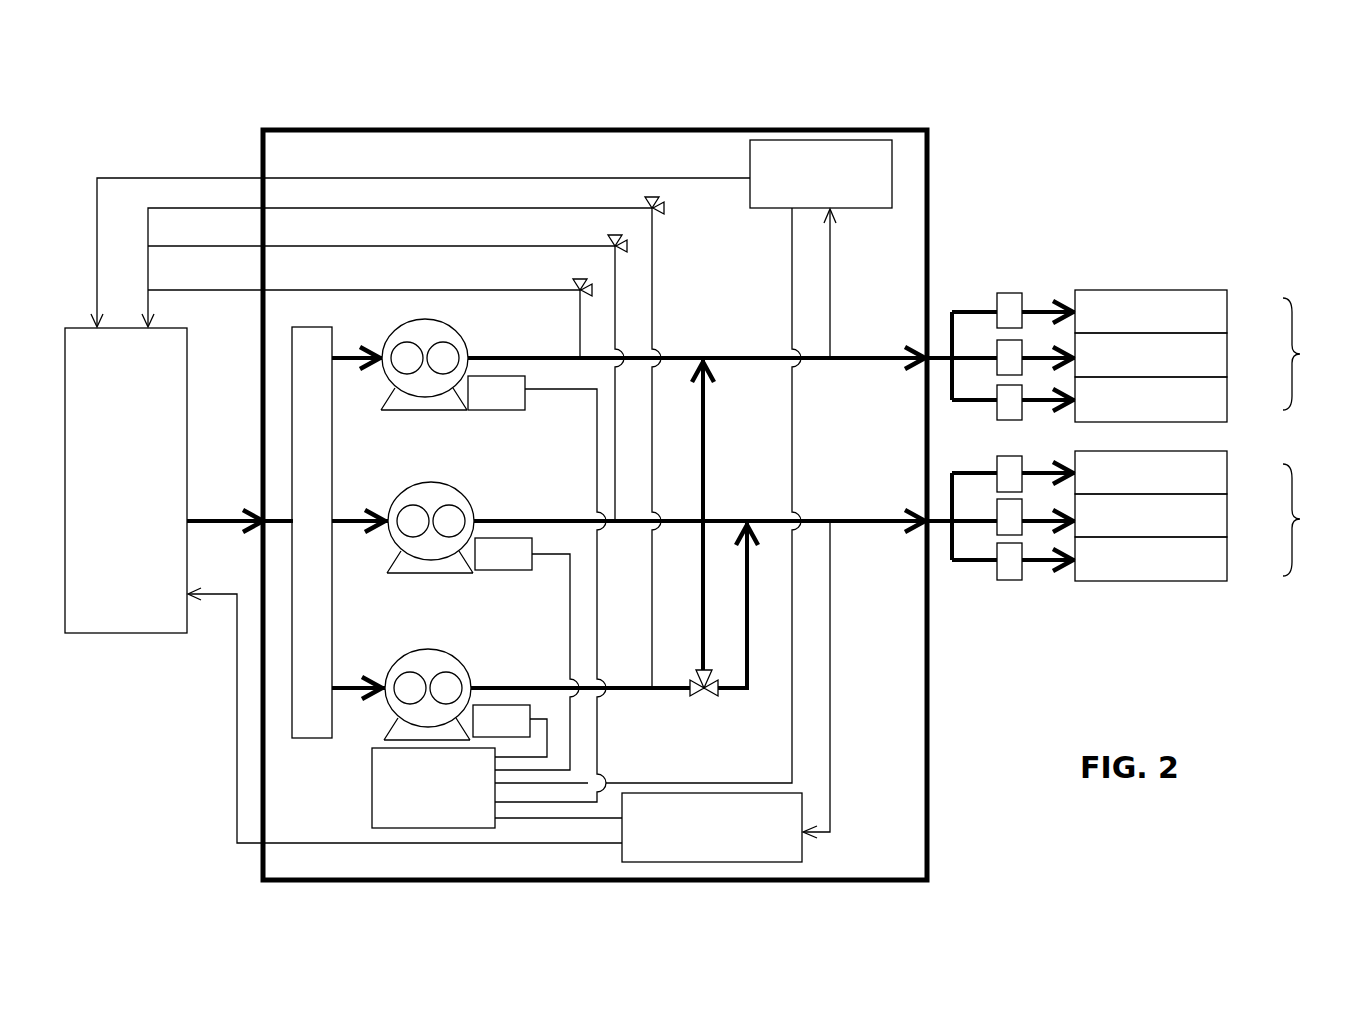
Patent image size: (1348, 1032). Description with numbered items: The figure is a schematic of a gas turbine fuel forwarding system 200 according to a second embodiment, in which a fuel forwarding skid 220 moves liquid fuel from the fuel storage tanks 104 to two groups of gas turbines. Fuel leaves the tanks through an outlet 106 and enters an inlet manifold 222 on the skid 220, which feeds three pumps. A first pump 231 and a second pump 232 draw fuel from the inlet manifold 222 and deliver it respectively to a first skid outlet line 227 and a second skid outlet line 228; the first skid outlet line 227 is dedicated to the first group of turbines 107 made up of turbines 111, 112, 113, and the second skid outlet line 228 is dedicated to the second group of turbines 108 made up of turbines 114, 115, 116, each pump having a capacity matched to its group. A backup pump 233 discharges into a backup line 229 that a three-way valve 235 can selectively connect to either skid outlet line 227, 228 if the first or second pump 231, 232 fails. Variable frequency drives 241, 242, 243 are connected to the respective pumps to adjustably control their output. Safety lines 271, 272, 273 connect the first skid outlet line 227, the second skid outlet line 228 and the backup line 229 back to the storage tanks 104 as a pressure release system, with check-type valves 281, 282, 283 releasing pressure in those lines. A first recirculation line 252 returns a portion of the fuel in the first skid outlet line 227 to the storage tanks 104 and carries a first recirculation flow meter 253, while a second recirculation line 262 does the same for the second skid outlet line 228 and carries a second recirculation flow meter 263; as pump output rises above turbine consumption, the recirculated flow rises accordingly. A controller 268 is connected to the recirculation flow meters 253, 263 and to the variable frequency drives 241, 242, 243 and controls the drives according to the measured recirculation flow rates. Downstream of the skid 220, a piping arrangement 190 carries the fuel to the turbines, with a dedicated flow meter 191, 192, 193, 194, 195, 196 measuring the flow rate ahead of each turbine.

The gas turbine fuel forwarding system 200 is at (1103, 82).
The skid 220 is at (811, 127).
The fuel storage tanks 104 is at (90, 633).
The outlet 106 is at (217, 519).
The inlet manifold 222 is at (322, 327).
The first pump 231 is at (460, 337).
The second pump 232 is at (398, 498).
The backup pump 233 is at (398, 663).
The variable frequency drive 241 is at (497, 412).
The variable frequency drive 242 is at (493, 571).
The variable frequency drive 243 is at (497, 704).
The first skid outlet line 227 is at (866, 355).
The second skid outlet line 228 is at (864, 519).
The backup line 229 is at (623, 692).
The three-way valve 235 is at (704, 700).
The controller 268 is at (372, 797).
The first recirculation flow meter 253 is at (750, 152).
The first recirculation line 252 is at (832, 256).
The second recirculation line 262 is at (833, 615).
The second recirculation flow meter 263 is at (800, 852).
The safety line 271 is at (367, 290).
The safety line 272 is at (366, 246).
The safety line 273 is at (363, 208).
The valve 281 is at (576, 288).
The valve 282 is at (628, 246).
The valve 283 is at (662, 209).
The piping arrangement 190 is at (998, 222).
The flow meter 191 is at (1007, 293).
The flow meter 192 is at (1005, 350).
The flow meter 193 is at (1015, 412).
The flow meter 194 is at (1003, 463).
The flow meter 195 is at (1006, 508).
The flow meter 196 is at (1005, 568).
The first group of turbines 107 is at (1207, 356).
The second group of turbines 108 is at (1207, 516).
The turbine 111 is at (1227, 300).
The turbine 112 is at (1227, 344).
The turbine 113 is at (1227, 388).
The turbine 114 is at (1227, 468).
The turbine 115 is at (1227, 511).
The turbine 116 is at (1227, 555).